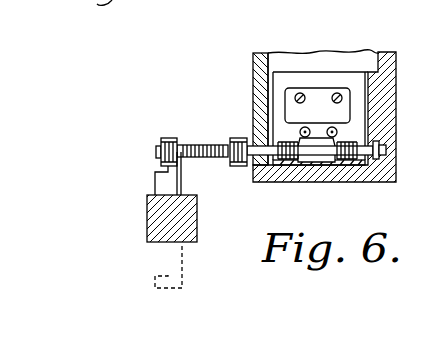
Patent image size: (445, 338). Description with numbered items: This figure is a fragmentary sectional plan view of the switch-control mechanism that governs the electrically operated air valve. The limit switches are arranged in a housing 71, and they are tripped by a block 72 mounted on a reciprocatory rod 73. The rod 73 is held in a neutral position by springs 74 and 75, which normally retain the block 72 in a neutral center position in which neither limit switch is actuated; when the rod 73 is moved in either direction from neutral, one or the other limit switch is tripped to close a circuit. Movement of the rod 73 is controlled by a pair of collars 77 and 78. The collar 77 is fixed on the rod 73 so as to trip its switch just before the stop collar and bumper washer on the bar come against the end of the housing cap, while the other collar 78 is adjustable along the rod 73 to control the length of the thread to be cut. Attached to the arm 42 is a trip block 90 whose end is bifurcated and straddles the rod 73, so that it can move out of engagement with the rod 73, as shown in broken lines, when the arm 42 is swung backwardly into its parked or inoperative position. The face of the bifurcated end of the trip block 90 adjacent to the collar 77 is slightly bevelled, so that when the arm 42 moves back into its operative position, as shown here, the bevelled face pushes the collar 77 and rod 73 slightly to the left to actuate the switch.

The housing 71 is at (317, 95).
The block 72 is at (316, 152).
The reciprocatory rod 73 is at (157, 152).
The spring 74 is at (358, 170).
The spring 75 is at (284, 172).
The collar 77 is at (172, 138).
The collar 78 is at (238, 137).
The trip block 90 is at (163, 186).
The arm 42 is at (147, 223).